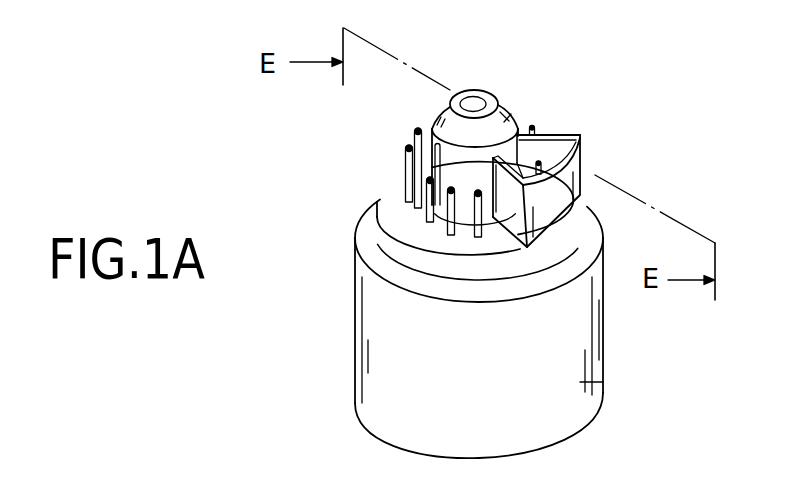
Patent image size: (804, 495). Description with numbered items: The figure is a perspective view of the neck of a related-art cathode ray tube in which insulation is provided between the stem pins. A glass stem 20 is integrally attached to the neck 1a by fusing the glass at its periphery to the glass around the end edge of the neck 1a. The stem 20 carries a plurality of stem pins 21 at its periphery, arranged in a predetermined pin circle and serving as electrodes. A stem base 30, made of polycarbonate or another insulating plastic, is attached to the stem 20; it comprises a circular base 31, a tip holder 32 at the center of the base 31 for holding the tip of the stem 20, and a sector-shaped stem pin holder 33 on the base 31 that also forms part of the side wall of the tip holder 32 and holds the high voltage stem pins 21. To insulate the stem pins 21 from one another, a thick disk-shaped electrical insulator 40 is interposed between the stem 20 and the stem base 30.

The neck 1a is at (603, 382).
The stem 20 is at (582, 235).
The stem pins 21 is at (540, 162).
The stem base 30 is at (534, 123).
The circular base 31 is at (392, 182).
The tip holder 32 is at (503, 117).
The stem pin holder 33 is at (585, 163).
The electrical insulator 40 is at (397, 253).